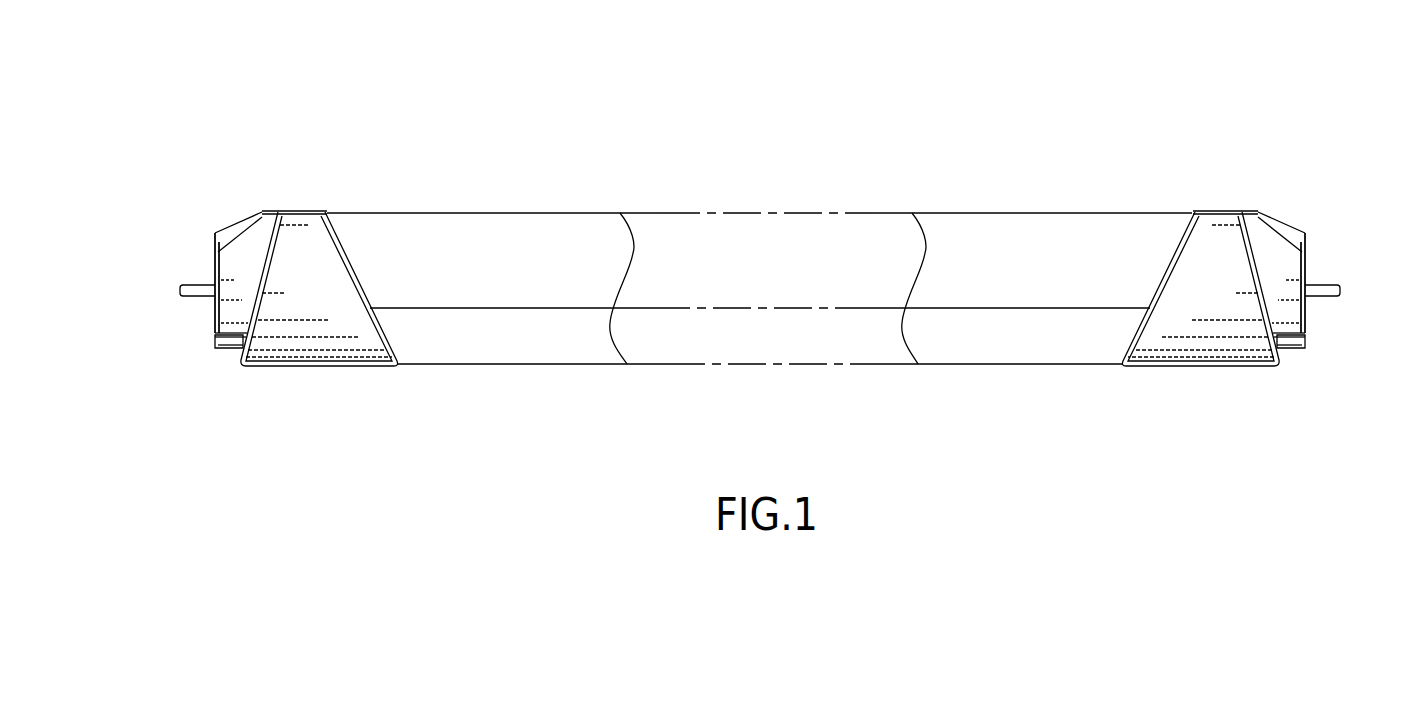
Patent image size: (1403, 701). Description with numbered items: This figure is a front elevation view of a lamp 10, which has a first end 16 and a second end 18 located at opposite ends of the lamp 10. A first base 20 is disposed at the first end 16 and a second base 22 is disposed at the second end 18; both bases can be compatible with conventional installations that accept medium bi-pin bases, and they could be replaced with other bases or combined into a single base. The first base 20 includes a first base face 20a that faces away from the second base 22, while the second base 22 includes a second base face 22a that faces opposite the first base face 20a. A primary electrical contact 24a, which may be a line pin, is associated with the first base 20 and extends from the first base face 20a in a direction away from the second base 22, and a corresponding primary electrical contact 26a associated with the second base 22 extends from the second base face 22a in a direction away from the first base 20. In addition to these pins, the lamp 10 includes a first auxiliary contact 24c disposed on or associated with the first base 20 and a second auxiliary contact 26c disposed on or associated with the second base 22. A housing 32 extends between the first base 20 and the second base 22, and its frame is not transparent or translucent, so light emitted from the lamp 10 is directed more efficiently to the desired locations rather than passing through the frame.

The lamp 10 is at (515, 130).
The first end 16 is at (260, 245).
The second end 18 is at (1258, 252).
The first base 20 is at (245, 250).
The second base 22 is at (1178, 352).
The first base face 20a is at (212, 308).
The second base face 22a is at (1307, 312).
The primary electrical contact 24a is at (192, 287).
The first auxiliary contact 24c is at (228, 343).
The primary electrical contact 26a is at (1320, 287).
The second auxiliary contact 26c is at (1293, 343).
The housing 32 is at (524, 380).